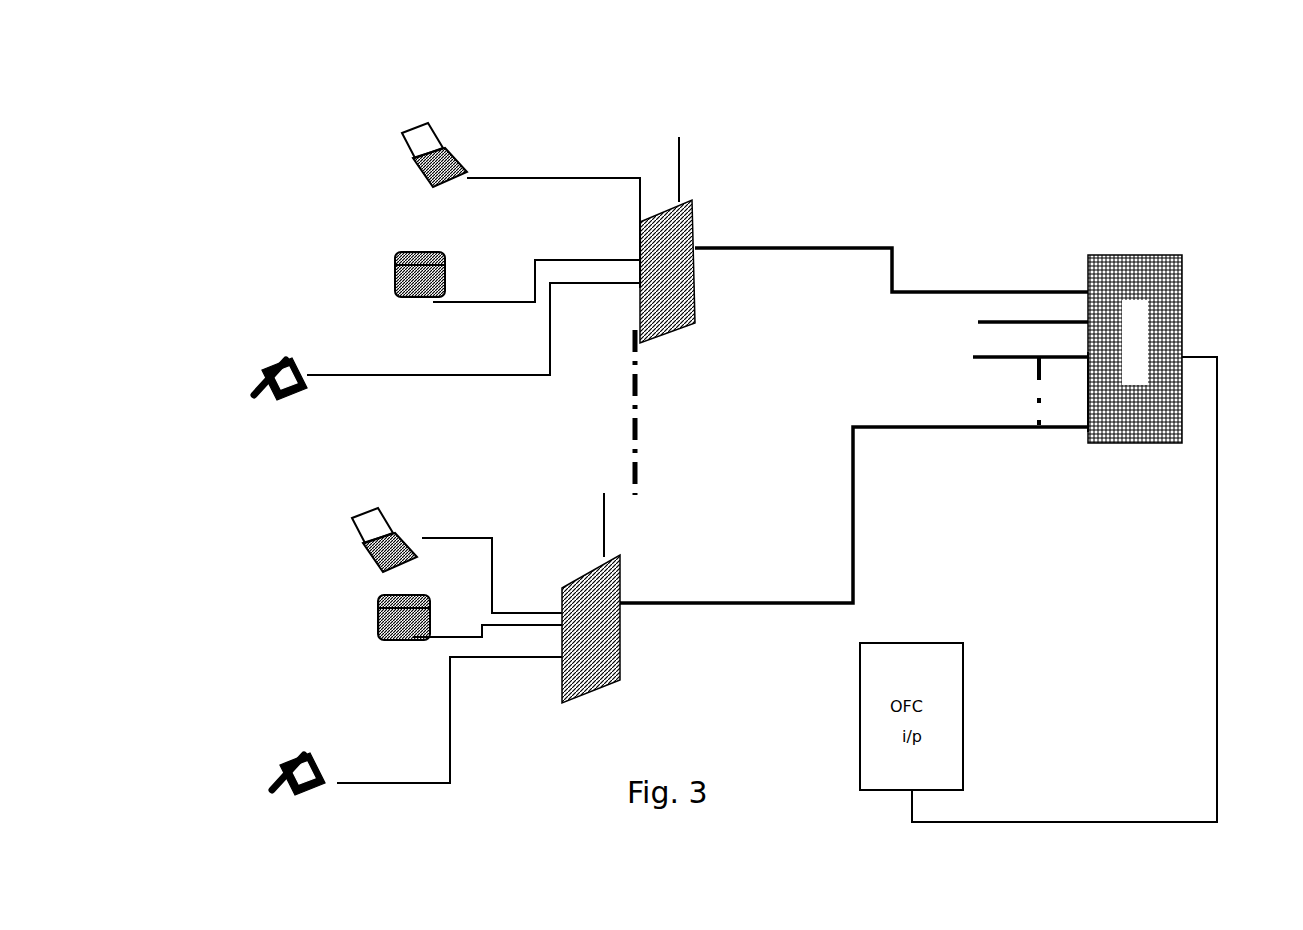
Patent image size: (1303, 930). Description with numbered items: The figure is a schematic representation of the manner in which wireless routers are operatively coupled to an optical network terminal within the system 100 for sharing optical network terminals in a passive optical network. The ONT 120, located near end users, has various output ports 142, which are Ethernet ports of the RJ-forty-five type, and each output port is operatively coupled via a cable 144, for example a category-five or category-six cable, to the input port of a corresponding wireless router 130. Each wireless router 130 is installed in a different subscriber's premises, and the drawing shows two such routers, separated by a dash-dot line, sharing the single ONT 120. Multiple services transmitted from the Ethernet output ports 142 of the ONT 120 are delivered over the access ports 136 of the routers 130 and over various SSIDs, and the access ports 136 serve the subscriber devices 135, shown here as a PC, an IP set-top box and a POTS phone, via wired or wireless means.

The system 100 is at (790, 262).
The optical network terminal 120 is at (1110, 255).
The wireless router 130 is at (668, 238).
The subscriber device 135 is at (312, 305).
The access port 136 is at (638, 283).
The output port 142 is at (1090, 428).
The cable 144 is at (1028, 320).